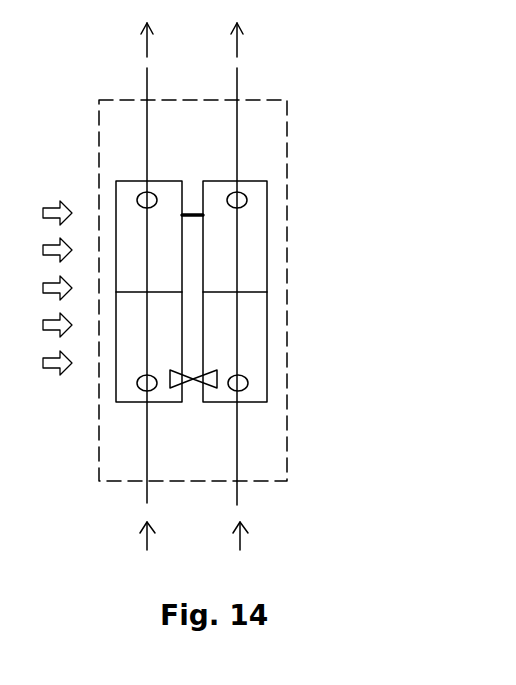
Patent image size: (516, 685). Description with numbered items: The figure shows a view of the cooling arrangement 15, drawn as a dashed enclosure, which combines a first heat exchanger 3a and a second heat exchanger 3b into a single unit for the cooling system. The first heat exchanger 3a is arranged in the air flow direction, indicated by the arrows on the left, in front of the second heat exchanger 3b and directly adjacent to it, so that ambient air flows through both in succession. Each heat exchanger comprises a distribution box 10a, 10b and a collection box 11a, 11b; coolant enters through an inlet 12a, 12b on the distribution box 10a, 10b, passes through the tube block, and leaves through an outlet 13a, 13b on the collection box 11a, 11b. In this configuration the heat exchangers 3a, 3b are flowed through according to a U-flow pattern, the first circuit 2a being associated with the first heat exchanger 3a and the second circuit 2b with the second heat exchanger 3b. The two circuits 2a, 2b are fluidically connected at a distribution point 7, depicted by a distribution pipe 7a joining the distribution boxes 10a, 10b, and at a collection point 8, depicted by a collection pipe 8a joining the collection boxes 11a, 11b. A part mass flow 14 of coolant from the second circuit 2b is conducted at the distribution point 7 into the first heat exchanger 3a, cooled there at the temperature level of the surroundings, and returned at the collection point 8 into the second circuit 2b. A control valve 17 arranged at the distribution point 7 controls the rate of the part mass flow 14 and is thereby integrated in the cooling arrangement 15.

The first circuit 2a is at (144, 46).
The second circuit 2b is at (241, 47).
The first heat exchanger 3a is at (101, 323).
The second heat exchanger 3b is at (301, 307).
The distribution point 7 is at (294, 367).
The distribution pipe 7a is at (175, 387).
The collection point 8 is at (294, 188).
The collection pipe 8a is at (187, 213).
The distribution box 10a is at (172, 354).
The distribution box 10b is at (256, 349).
The collection box 11a is at (170, 260).
The collection box 11b is at (253, 260).
The inlet 12a is at (143, 388).
The inlet 12b is at (246, 387).
The outlet 13a is at (141, 196).
The outlet 13b is at (245, 203).
The part mass flow 14 is at (169, 169).
The cooling arrangement 15 is at (288, 104).
The control valve 17 is at (193, 384).